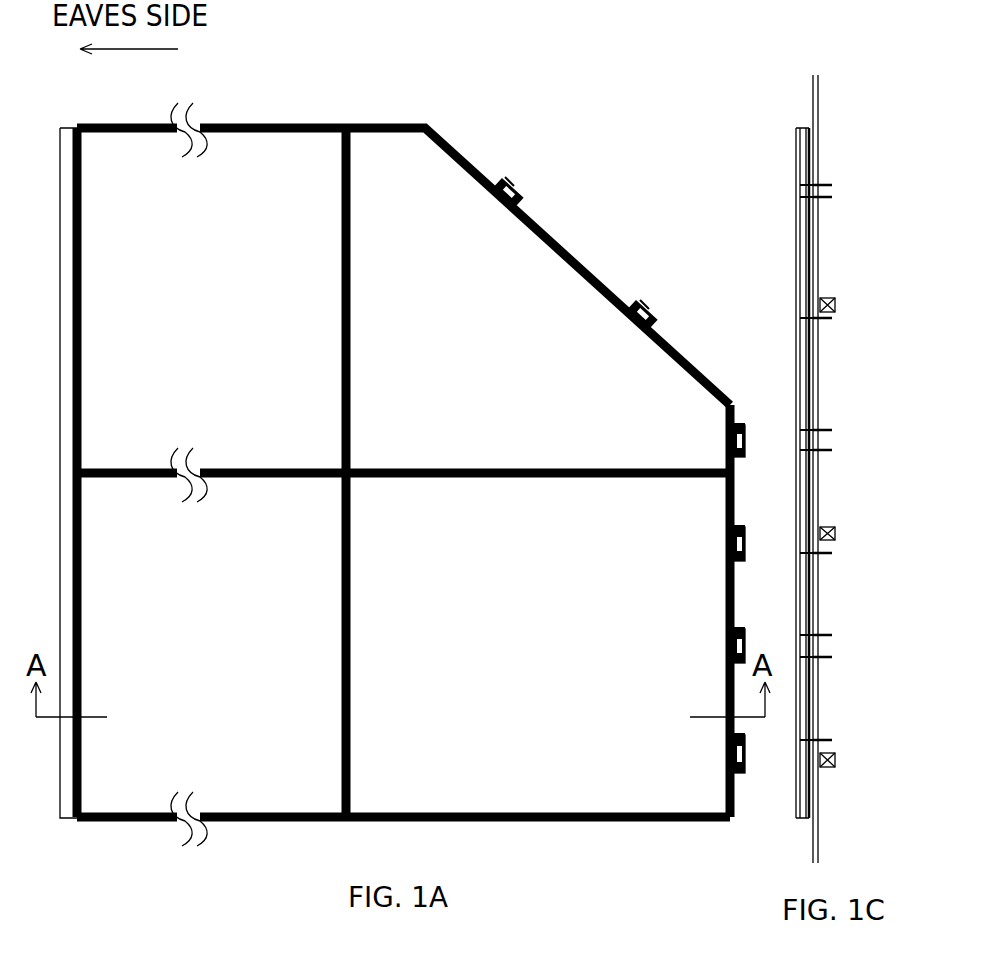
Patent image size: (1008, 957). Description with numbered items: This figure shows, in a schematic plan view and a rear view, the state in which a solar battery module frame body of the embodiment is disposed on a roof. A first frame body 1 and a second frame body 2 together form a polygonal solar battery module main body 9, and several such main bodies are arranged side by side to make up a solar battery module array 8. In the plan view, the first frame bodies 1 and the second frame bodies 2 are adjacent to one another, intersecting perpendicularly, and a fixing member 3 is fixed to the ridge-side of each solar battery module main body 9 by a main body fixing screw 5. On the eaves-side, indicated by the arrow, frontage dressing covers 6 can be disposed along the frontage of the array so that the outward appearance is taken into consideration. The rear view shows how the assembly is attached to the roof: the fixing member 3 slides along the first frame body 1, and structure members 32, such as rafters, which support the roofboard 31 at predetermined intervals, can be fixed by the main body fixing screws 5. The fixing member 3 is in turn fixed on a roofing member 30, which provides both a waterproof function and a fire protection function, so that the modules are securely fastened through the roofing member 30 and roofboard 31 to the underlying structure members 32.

In FIG. 1A, the first frame body 1 is at (77, 288).
In FIG. 1A, the second frame body 2 is at (218, 468).
In FIG. 1A, the fixing member 3 is at (508, 194).
In FIG. 1A, the main body fixing screw 5 is at (493, 182).
In FIG. 1C, the main body fixing screw 5 is at (822, 185).
In FIG. 1A, the frontage dressing cover 6 is at (67, 250).
In FIG. 1A, the solar battery module array 8 is at (436, 72).
In FIG. 1A, the solar battery module main body 9 is at (268, 135).
In FIG. 1C, the roofing member 30 is at (813, 100).
In FIG. 1C, the roofboard 31 is at (818, 122).
In FIG. 1C, the structure member 32 is at (822, 302).